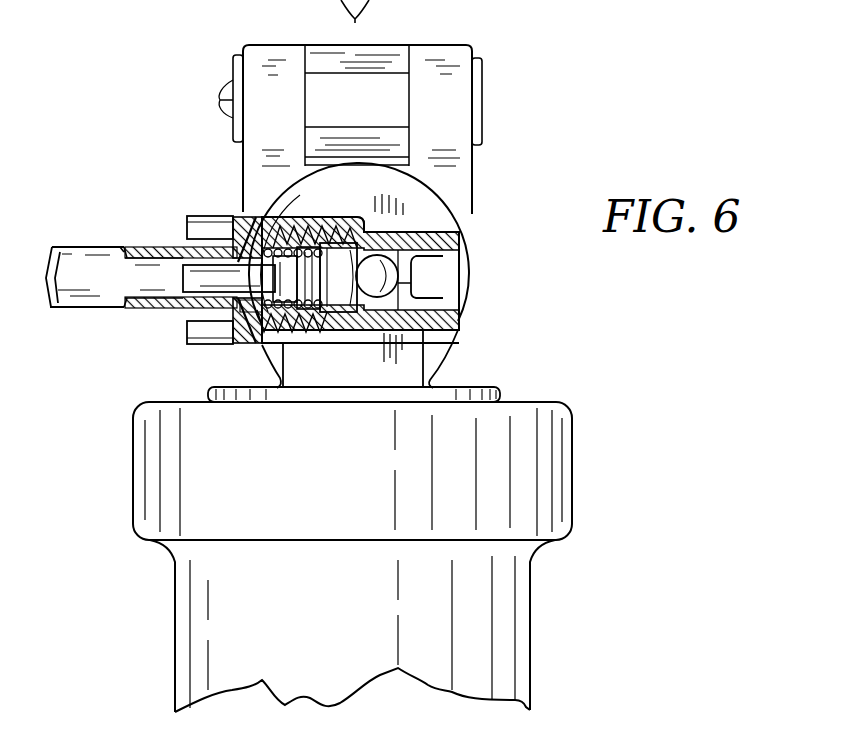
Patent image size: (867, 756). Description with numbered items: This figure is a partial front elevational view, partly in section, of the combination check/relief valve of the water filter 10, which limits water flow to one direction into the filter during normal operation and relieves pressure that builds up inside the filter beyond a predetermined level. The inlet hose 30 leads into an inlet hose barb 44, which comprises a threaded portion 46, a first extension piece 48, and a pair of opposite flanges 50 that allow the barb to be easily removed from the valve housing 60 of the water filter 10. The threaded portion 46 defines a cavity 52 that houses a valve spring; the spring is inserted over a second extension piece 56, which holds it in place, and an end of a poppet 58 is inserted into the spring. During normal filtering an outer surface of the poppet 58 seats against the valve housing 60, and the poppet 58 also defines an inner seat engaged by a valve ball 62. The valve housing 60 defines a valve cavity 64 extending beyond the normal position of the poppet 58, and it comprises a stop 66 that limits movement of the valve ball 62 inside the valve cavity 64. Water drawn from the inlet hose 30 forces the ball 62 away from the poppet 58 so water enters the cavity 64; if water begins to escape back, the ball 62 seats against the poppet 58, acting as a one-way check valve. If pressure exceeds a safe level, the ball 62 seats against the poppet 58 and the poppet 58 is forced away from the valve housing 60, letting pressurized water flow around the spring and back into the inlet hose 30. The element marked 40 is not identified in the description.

The water filter 10 is at (520, 68).
The inlet hose 30 is at (95, 256).
The hose fitting 40 is at (215, 226).
The inlet hose barb 44 is at (246, 226).
The threaded portion 46 is at (293, 247).
The first extension piece 48 is at (187, 311).
The opposite flanges 50 is at (221, 215).
The cavity 52 is at (325, 243).
The second extension piece 56 is at (253, 304).
The poppet 58 is at (343, 318).
The valve housing 60 is at (358, 228).
The valve ball 62 is at (384, 266).
The valve cavity 64 is at (400, 337).
The stop 66 is at (425, 283).